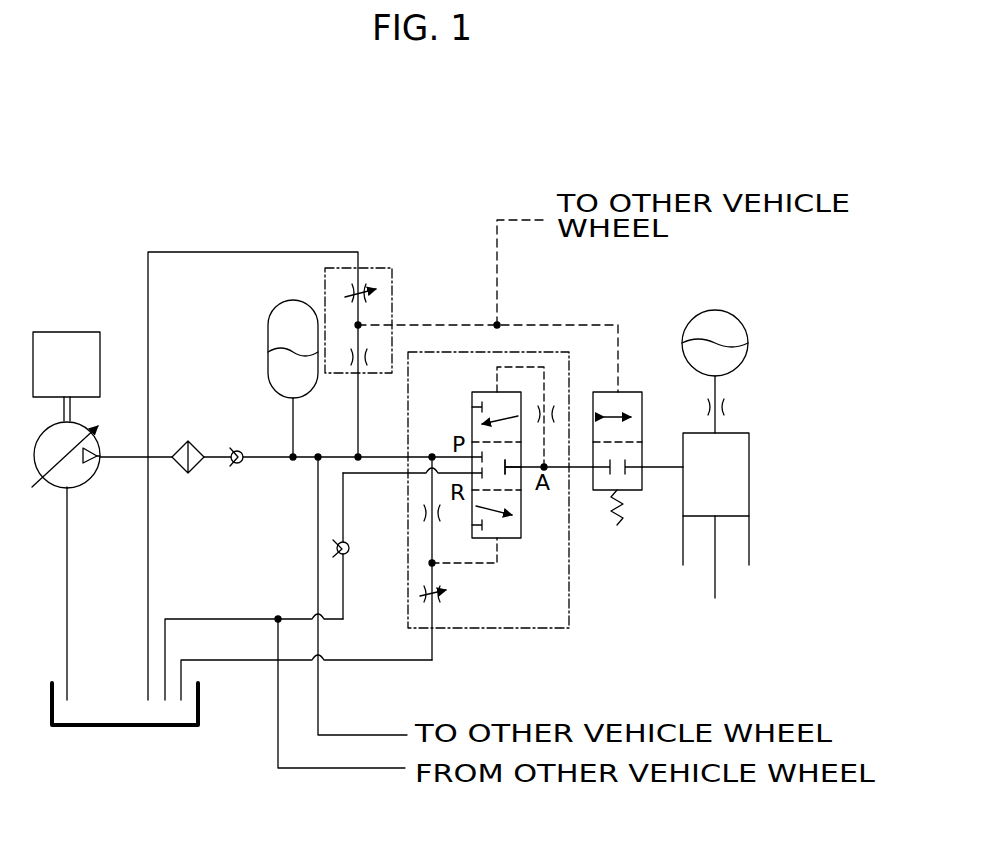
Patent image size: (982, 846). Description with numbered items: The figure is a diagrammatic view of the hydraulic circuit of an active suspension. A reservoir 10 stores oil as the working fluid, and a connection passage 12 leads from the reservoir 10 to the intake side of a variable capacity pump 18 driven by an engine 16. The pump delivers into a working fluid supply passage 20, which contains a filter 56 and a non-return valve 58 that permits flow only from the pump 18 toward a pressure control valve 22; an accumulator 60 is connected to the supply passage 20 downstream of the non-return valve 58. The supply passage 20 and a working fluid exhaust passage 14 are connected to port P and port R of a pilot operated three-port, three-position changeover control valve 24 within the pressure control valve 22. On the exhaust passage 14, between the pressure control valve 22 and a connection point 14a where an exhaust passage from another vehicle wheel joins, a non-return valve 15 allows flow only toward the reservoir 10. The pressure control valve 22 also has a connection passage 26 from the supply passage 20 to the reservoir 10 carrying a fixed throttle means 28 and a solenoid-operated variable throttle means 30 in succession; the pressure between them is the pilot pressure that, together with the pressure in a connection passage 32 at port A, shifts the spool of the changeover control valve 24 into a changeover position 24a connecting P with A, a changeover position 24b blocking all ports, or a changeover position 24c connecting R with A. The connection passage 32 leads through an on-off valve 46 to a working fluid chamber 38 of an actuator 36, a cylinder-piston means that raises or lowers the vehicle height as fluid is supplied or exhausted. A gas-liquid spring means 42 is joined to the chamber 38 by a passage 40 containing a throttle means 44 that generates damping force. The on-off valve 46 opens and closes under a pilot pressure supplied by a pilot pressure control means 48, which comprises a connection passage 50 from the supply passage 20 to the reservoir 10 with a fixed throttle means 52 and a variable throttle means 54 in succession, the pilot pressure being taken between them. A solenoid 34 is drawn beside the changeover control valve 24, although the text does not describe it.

The reservoir 10 is at (127, 725).
The connection passage 12 is at (68, 600).
The working fluid exhaust passage 14 is at (223, 619).
The connection point 14a is at (281, 619).
The non-return valve 15 is at (350, 548).
The engine 16 is at (59, 332).
The pump 18 is at (52, 488).
The working fluid supply passage 20 is at (122, 458).
The pressure control valve 22 is at (575, 628).
The changeover control valve 24 is at (472, 403).
The changeover position 24a is at (499, 545).
The changeover position 24b is at (512, 492).
The changeover position 24c is at (486, 390).
The connection passage 26 is at (435, 645).
The fixed throttle means 28 is at (422, 513).
The variable throttle means 30 is at (420, 596).
The connection passage 32 is at (657, 467).
The solenoid 34 is at (556, 413).
The actuator 36 is at (752, 452).
The working fluid chamber 38 is at (738, 505).
The passage 40 is at (718, 395).
The gas-liquid spring means 42 is at (714, 311).
The throttle means 44 is at (728, 407).
The on-off valve 46 is at (636, 494).
The pilot pressure control means 48 is at (372, 268).
The connection passage 50 is at (197, 252).
The fixed throttle means 52 is at (368, 358).
The variable throttle means 54 is at (345, 297).
The filter 56 is at (190, 474).
The non-return valve 58 is at (233, 450).
The accumulator 60 is at (268, 342).